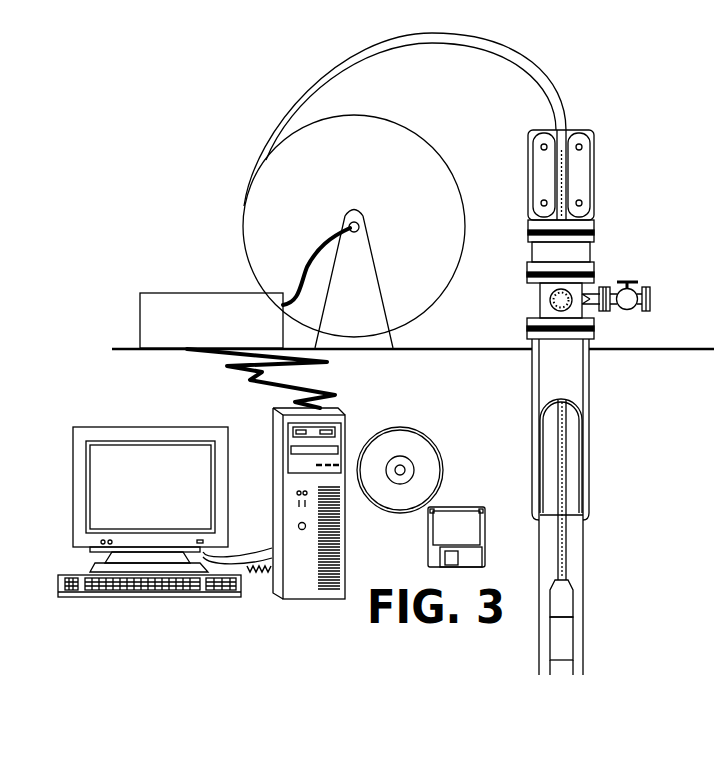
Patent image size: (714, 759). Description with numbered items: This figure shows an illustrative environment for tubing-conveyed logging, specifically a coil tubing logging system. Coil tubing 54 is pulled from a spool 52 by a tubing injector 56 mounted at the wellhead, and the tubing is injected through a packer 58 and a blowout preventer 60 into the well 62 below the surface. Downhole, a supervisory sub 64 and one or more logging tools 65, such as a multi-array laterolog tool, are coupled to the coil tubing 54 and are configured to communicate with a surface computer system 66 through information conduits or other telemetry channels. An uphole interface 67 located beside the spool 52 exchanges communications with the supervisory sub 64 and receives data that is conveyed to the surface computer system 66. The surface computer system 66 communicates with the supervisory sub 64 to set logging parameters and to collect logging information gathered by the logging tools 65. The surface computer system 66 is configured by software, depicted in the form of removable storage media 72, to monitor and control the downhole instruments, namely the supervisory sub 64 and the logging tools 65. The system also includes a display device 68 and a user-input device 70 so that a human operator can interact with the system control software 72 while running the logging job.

The spool 52 is at (352, 192).
The coil tubing 54 is at (290, 94).
The tubing injector 56 is at (594, 160).
The packer 58 is at (594, 247).
The blowout preventer 60 is at (536, 300).
The well 62 is at (586, 393).
The supervisory sub 64 is at (574, 597).
The logging tools 65 is at (574, 641).
The surface computer system 66 is at (273, 522).
The uphole interface 67 is at (185, 293).
The display device 68 is at (83, 546).
The user-input device 70 is at (80, 597).
The removable storage media 72 is at (426, 519).